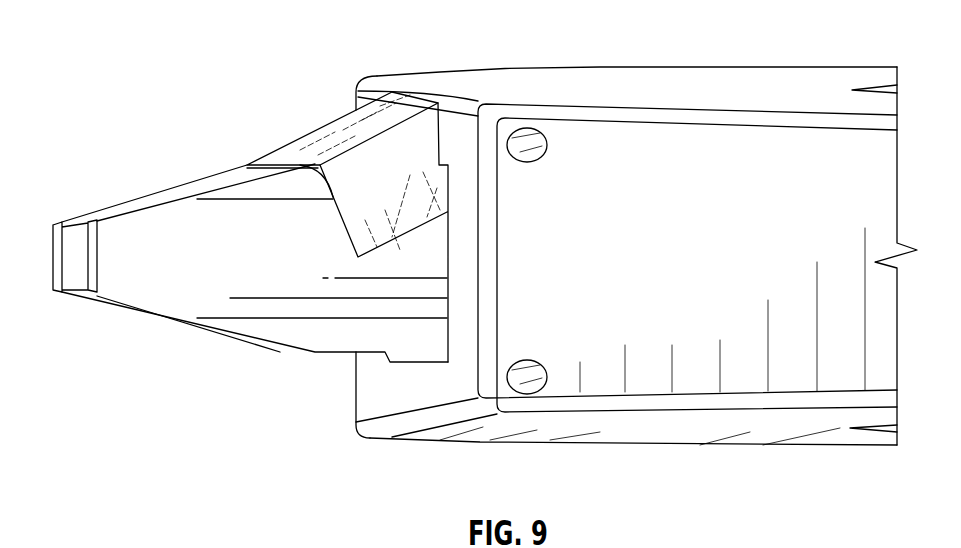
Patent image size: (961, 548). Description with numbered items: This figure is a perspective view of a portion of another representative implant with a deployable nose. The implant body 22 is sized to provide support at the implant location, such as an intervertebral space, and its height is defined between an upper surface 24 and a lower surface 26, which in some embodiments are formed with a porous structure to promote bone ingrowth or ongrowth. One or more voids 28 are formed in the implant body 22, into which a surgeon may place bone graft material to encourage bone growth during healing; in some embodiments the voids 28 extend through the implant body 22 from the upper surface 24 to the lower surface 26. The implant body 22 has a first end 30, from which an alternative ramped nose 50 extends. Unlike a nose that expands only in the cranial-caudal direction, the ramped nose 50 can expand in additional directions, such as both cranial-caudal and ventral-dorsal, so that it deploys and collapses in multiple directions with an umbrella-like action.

The implant body 22 is at (595, 380).
The upper surface 24 is at (652, 82).
The lower surface 26 is at (667, 435).
The void 28 is at (882, 88).
The first end 30 is at (365, 385).
The ramped nose 50 is at (132, 208).